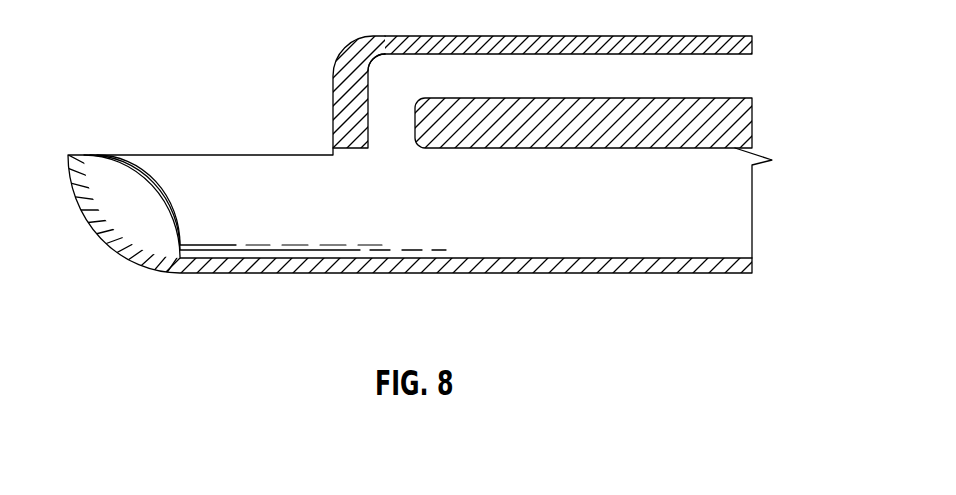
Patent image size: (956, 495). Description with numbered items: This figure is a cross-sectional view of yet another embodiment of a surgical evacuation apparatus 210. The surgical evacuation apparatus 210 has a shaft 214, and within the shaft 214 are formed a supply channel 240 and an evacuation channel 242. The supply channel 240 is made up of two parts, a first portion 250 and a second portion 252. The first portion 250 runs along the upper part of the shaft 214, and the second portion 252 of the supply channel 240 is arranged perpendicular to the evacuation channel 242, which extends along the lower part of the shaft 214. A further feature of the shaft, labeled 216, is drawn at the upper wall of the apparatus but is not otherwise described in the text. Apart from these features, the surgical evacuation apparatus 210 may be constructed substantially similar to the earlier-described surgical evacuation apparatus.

The surgical evacuation apparatus 210 is at (127, 40).
The shaft 214 is at (607, 273).
The side wall 216 is at (333, 100).
The supply channel 240 is at (648, 55).
The evacuation channel 242 is at (469, 257).
The first portion 250 is at (543, 55).
The second portion 252 is at (372, 59).